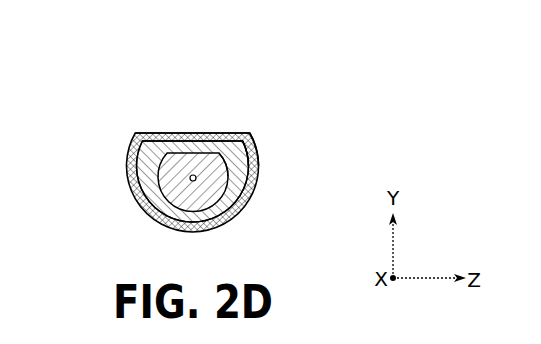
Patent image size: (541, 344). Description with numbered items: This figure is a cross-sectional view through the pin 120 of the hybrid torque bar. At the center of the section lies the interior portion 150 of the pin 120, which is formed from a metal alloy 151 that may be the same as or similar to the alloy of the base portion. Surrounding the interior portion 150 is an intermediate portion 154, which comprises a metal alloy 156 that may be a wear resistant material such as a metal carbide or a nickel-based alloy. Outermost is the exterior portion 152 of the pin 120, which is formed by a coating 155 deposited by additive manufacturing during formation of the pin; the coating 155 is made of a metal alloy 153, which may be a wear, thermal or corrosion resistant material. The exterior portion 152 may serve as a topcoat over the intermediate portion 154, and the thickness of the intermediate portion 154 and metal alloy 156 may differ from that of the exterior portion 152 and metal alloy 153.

The pin 120 is at (247, 101).
The interior portion 150 is at (176, 188).
The metal alloy 151 is at (202, 188).
The exterior portion 152 is at (128, 152).
The metal alloy 153 is at (250, 143).
The intermediate portion 154 is at (131, 177).
The coating 155 is at (190, 133).
The metal alloy 156 is at (236, 176).